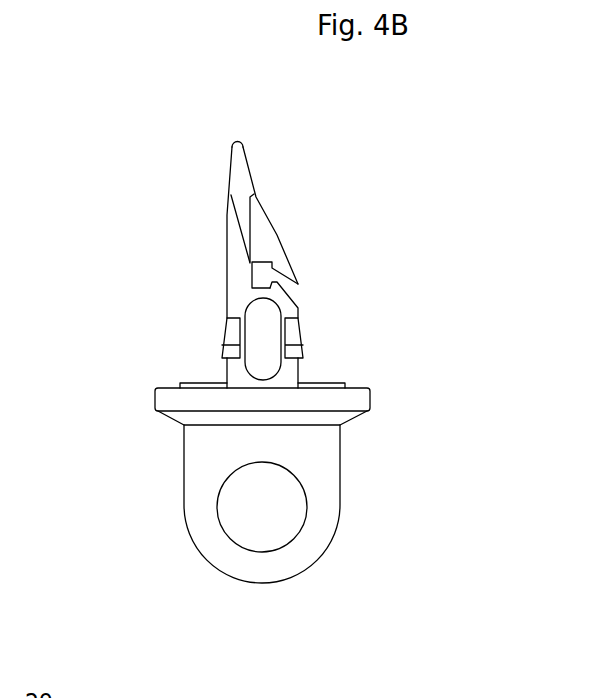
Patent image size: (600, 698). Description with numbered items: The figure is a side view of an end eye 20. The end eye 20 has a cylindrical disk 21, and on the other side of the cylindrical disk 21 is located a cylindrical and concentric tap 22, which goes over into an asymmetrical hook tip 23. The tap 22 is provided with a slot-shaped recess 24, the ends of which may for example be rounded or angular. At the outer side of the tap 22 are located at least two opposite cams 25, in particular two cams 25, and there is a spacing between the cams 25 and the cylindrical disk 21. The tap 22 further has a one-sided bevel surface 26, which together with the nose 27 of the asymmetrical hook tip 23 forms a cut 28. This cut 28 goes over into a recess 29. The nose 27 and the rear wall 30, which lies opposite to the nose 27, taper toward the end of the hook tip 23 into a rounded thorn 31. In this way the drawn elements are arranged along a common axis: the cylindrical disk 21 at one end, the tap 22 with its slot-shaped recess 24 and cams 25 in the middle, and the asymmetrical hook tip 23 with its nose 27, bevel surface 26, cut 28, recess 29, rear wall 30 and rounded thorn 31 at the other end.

The end eye 20 is at (244, 303).
The cylindrical disk 21 is at (0, 23).
The tap 22 is at (259, 343).
The asymmetrical hook tip 23 is at (249, 165).
The slot-shaped recess 24 is at (260, 318).
The cams 25 is at (225, 337).
The bevel surface 26 is at (293, 300).
The nose 27 is at (282, 263).
The cut 28 is at (292, 290).
The recess 29 is at (265, 273).
The rear wall 30 is at (228, 268).
The rounded thorn 31 is at (243, 178).